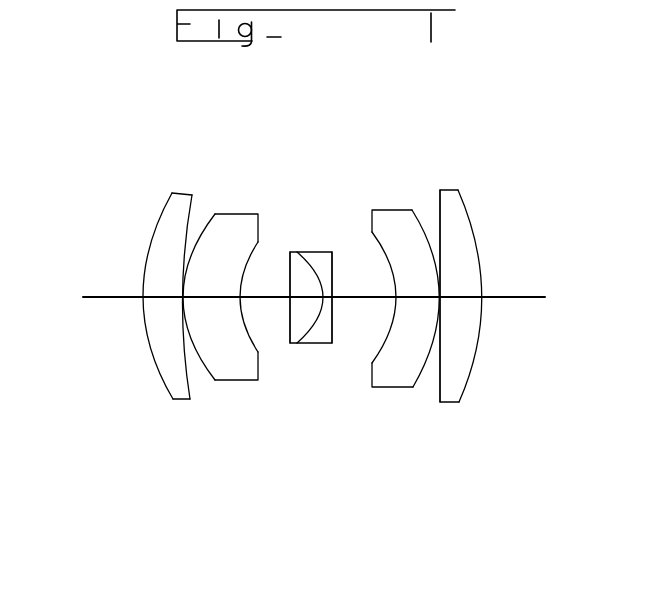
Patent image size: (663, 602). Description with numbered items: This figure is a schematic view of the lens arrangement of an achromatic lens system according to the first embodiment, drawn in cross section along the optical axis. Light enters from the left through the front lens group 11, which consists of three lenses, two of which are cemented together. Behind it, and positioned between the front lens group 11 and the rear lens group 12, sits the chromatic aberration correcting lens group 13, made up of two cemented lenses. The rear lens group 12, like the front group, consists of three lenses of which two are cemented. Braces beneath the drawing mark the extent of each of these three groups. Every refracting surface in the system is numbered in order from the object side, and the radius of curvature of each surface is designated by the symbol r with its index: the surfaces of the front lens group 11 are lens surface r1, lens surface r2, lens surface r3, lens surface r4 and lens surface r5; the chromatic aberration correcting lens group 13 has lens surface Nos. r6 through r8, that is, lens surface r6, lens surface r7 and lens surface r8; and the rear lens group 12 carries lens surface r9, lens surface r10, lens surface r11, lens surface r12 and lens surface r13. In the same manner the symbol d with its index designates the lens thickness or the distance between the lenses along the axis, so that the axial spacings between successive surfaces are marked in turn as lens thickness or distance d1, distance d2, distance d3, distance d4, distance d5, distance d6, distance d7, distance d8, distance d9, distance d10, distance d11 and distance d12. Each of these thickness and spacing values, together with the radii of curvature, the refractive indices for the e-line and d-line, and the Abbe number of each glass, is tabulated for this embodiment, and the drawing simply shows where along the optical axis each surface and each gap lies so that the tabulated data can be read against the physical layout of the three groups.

The front lens group 11 is at (212, 518).
The rear lens group 12 is at (538, 518).
The chromatic aberration correcting lens group 13 is at (320, 518).
The lens surface r1 is at (172, 193).
The lens surface r2 is at (175, 193).
The lens surface r3 is at (176, 193).
The lens surface r4 is at (217, 213).
The lens surface r5 is at (257, 213).
The lens surface r6 is at (291, 252).
The lens surface r7 is at (301, 253).
The lens surface r8 is at (330, 252).
The lens surface r9 is at (373, 210).
The lens surface r10 is at (403, 297).
The lens surface r11 is at (412, 210).
The lens surface r12 is at (440, 190).
The lens surface r13 is at (458, 190).
The lens thickness or distance between the lenses d1 is at (167, 297).
The lens thickness or distance between the lenses d2 is at (183, 297).
The lens thickness or distance between the lenses d3 is at (208, 297).
The lens thickness or distance between the lenses d4 is at (228, 297).
The lens thickness or distance between the lenses d5 is at (268, 297).
The lens thickness or distance between the lenses d6 is at (296, 297).
The lens thickness or distance between the lenses d7 is at (322, 297).
The lens thickness or distance between the lenses d8 is at (360, 297).
The lens thickness or distance between the lenses d9 is at (399, 297).
The lens thickness or distance between the lenses d10 is at (440, 297).
The lens thickness or distance between the lenses d11 is at (462, 297).
The lens thickness or distance between the lenses d12 is at (440, 297).